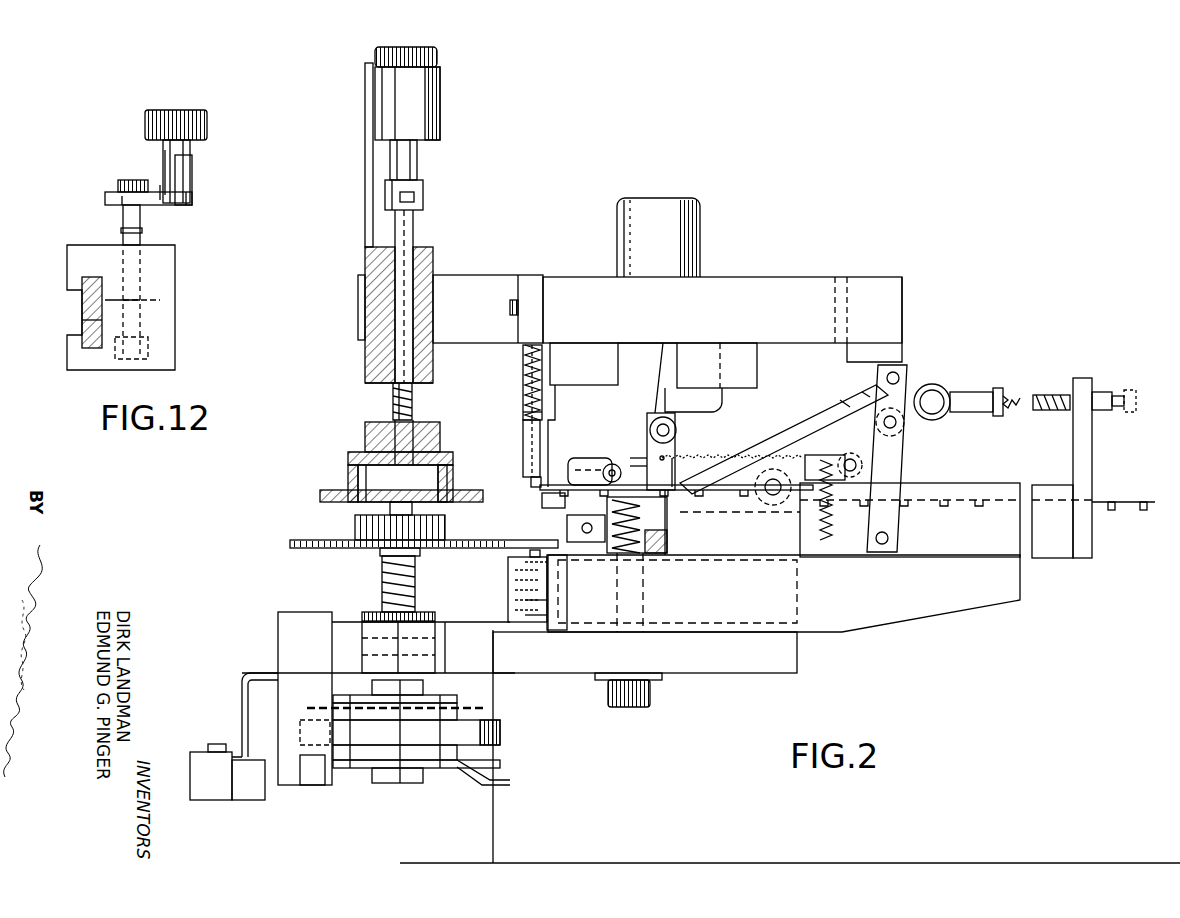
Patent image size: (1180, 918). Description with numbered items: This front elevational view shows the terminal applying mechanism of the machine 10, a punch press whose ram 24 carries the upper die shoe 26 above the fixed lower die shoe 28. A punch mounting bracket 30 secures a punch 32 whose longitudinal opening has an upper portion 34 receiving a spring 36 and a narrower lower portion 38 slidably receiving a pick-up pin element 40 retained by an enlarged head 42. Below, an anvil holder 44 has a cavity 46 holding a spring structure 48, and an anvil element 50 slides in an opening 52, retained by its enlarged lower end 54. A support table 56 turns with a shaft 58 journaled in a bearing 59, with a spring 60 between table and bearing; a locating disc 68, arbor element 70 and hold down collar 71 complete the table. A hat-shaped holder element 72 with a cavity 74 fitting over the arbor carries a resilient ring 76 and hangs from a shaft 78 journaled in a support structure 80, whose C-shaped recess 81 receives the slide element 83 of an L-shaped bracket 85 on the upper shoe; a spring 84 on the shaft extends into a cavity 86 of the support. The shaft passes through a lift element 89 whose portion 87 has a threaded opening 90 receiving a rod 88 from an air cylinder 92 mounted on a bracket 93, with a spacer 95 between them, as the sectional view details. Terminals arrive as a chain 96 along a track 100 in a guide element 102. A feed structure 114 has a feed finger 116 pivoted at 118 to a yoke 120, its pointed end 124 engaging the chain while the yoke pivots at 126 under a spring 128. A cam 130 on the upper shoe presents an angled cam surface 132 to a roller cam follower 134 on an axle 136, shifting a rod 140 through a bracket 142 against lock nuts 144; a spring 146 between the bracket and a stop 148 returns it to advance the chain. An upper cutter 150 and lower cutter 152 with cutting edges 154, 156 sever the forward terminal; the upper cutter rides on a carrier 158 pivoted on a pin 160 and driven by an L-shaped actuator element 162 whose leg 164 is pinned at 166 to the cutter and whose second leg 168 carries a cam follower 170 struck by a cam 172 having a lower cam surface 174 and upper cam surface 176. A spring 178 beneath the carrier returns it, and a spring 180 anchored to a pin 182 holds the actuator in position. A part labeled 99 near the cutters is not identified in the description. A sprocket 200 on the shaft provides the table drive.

In FIG. 2, the machine 10 is at (302, 428).
In FIG. 2, the ram 24 is at (700, 233).
In FIG. 2, the upper die shoe 26 is at (782, 277).
In FIG. 2, the lower die shoe 28 is at (797, 668).
In FIG. 2, the punch mounting bracket 30 is at (584, 364).
In FIG. 2, the punch 32 is at (555, 405).
In FIG. 2, the upper portion of the opening 34 is at (523, 385).
In FIG. 2, the spring 36 is at (523, 360).
In FIG. 2, the lower portion of the opening 38 is at (523, 440).
In FIG. 2, the pick-up pin element 40 is at (531, 482).
In FIG. 2, the enlarged head 42 is at (523, 406).
In FIG. 2, the anvil holder 44 is at (547, 592).
In FIG. 2, the cavity 46 is at (508, 600).
In FIG. 2, the spring structure 48 is at (547, 608).
In FIG. 2, the anvil element 50 is at (508, 560).
In FIG. 2, the opening 52 is at (508, 570).
In FIG. 2, the lower end of the anvil element 54 is at (547, 575).
In FIG. 2, the support table 56 is at (312, 552).
In FIG. 2, the shaft 58 is at (382, 586).
In FIG. 2, the bearing 59 is at (362, 614).
In FIG. 2, the spring 60 is at (382, 566).
In FIG. 2, the disc 68 is at (292, 542).
In FIG. 2, the arbor element 70 is at (355, 528).
In FIG. 2, the hold down collar 71 is at (400, 508).
In FIG. 2, the hat-shaped holder element 72 is at (350, 460).
In FIG. 2, the cavity 74 is at (447, 478).
In FIG. 2, the ring 76 is at (326, 502).
In FIG. 2, the shaft 78 is at (412, 405).
In FIG. 12, the support structure 80 is at (168, 298).
In FIG. 2, the support structure 80 is at (433, 258).
In FIG. 12, the C-shaped recess 81 is at (82, 294).
In FIG. 2, the C-shaped recess 81 is at (358, 289).
In FIG. 12, the slide element 83 is at (82, 320).
In FIG. 2, the spring 84 is at (393, 398).
In FIG. 2, the L-shaped bracket 85 is at (532, 275).
In FIG. 2, the cavity 86 is at (372, 378).
In FIG. 12, the portion 87 is at (118, 185).
In FIG. 12, the rod 88 is at (190, 150).
In FIG. 2, the rod 88 is at (417, 150).
In FIG. 12, the lift element 89 is at (192, 198).
In FIG. 2, the lift element 89 is at (423, 193).
In FIG. 12, the threaded opening 90 is at (180, 207).
In FIG. 2, the air cylinder 92 is at (440, 125).
In FIG. 2, the bracket 93 is at (365, 183).
In FIG. 12, the spacer 95 is at (163, 160).
In FIG. 2, the spacer 95 is at (415, 168).
In FIG. 2, the chain 96 is at (1128, 510).
In FIG. 2, the plate 99 is at (521, 538).
In FIG. 2, the track 100 is at (955, 506).
In FIG. 2, the guide element 102 is at (1045, 557).
In FIG. 2, the feed structure 114 is at (780, 398).
In FIG. 2, the feed finger 116 is at (745, 425).
In FIG. 2, the pivot 118 is at (896, 372).
In FIG. 2, the yoke 120 is at (905, 472).
In FIG. 2, the end of the feed finger 124 is at (700, 496).
In FIG. 2, the pivot 126 is at (883, 545).
In FIG. 2, the spring 128 is at (830, 460).
In FIG. 2, the cam 130 is at (902, 333).
In FIG. 2, the cam surface 132 is at (862, 392).
In FIG. 2, the roller cam follower 134 is at (896, 424).
In FIG. 2, the axle 136 is at (902, 430).
In FIG. 2, the rod 140 is at (965, 395).
In FIG. 2, the bracket 142 is at (1092, 447).
In FIG. 2, the lock nuts 144 is at (1115, 392).
In FIG. 2, the spring 146 is at (1048, 412).
In FIG. 2, the stop 148 is at (996, 418).
In FIG. 2, the upper cutter 150 is at (585, 460).
In FIG. 2, the lower cutter 152 is at (542, 500).
In FIG. 2, the cutting edge 154 is at (548, 470).
In FIG. 2, the cutting edge 156 is at (567, 518).
In FIG. 2, the carrier 158 is at (775, 500).
In FIG. 2, the pin 160 is at (775, 515).
In FIG. 2, the actuator element 162 is at (632, 466).
In FIG. 2, the leg 164 is at (638, 458).
In FIG. 2, the pin 166 is at (612, 464).
In FIG. 2, the second leg 168 is at (688, 412).
In FIG. 2, the cam follower 170 is at (651, 425).
In FIG. 2, the cam 172 is at (740, 388).
In FIG. 2, the lower cam surface 174 is at (658, 400).
In FIG. 2, the upper cam surface 176 is at (668, 343).
In FIG. 2, the spring 178 is at (648, 548).
In FIG. 2, the spring 180 is at (690, 470).
In FIG. 2, the pin 182 is at (762, 455).
In FIG. 2, the sprocket 200 is at (500, 709).